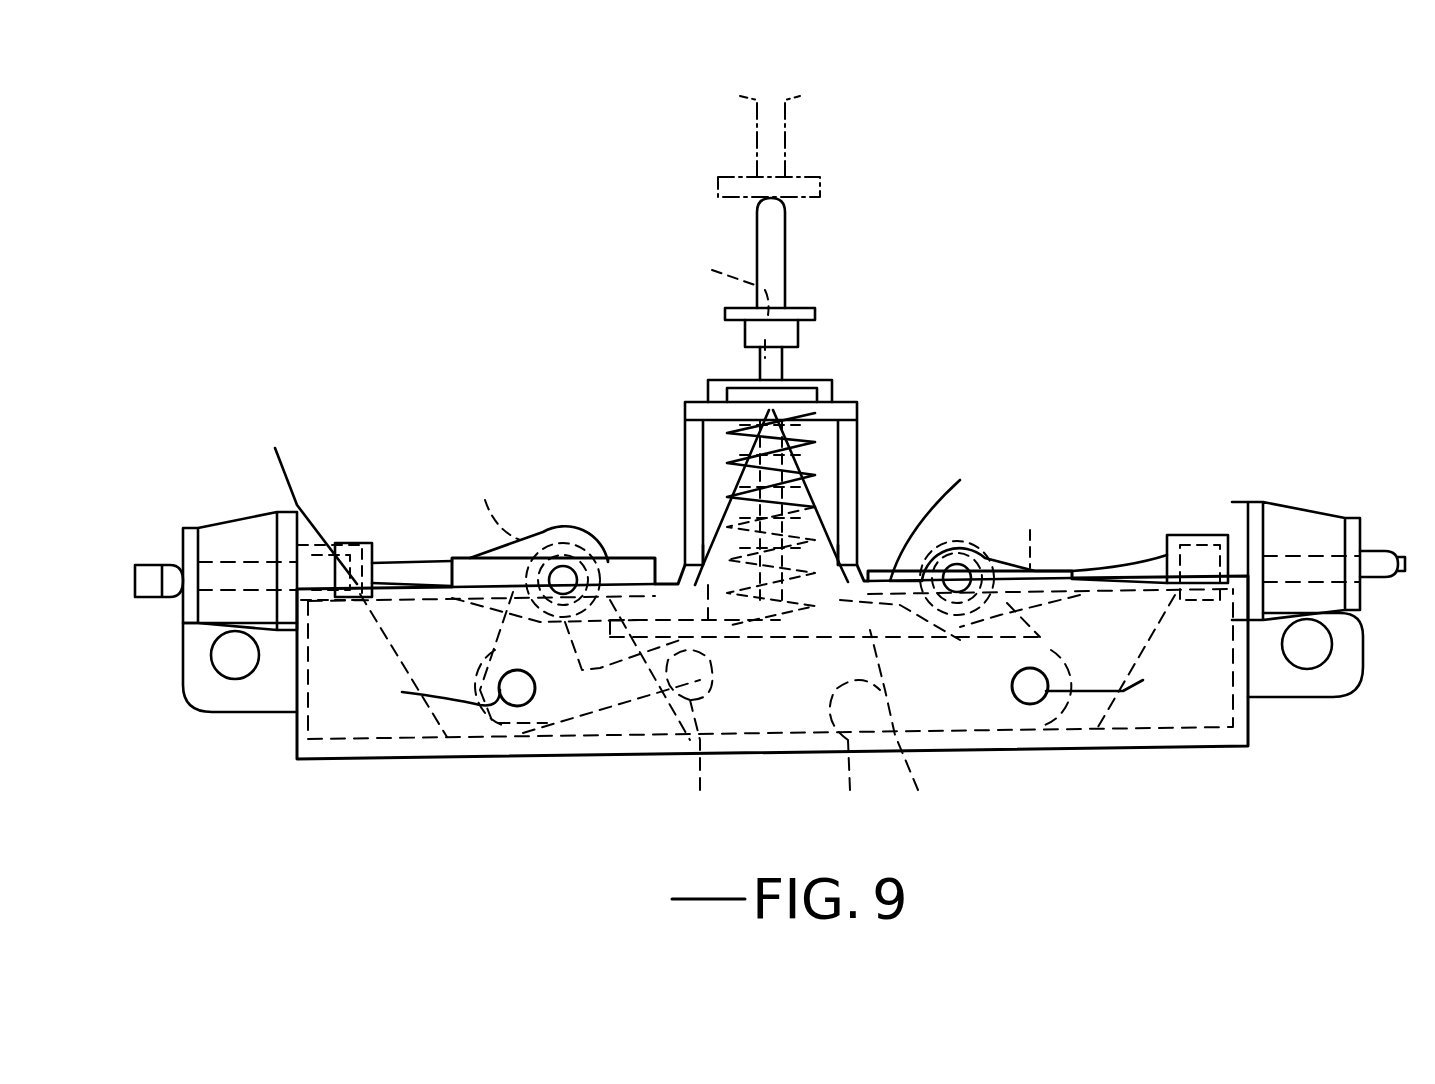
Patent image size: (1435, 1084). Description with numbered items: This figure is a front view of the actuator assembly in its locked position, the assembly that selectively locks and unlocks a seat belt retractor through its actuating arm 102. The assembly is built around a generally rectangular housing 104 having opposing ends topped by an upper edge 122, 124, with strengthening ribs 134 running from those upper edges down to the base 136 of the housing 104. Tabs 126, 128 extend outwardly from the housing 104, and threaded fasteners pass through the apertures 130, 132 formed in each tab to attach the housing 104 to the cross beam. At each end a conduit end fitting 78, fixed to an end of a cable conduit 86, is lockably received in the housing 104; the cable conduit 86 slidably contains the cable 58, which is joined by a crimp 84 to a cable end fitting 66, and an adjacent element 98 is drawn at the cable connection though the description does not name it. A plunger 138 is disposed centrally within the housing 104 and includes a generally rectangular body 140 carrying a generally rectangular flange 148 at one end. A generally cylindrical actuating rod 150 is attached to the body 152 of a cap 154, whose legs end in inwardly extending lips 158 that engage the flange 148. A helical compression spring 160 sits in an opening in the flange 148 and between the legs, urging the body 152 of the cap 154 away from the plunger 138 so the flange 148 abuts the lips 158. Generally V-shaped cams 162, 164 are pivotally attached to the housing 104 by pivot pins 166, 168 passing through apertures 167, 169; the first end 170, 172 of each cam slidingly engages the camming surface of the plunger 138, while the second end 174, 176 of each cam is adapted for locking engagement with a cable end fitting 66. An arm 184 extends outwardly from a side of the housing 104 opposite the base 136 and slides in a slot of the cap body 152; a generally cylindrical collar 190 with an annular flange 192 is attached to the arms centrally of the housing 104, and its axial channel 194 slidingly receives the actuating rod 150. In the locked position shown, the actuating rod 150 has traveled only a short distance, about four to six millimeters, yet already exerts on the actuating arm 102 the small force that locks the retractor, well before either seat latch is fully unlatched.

The cable 58 is at (400, 563).
The cable end fitting 66 is at (546, 530).
The conduit end fitting 78 is at (240, 512).
The crimp 84 is at (636, 558).
The cable conduit 86 is at (170, 570).
The coupling block 98 is at (355, 543).
The actuating arm 102 is at (820, 190).
The housing 104 is at (608, 760).
The upper edge 122 is at (303, 500).
The upper edge 124 is at (1234, 502).
The tab 126 is at (205, 692).
The tab 128 is at (1335, 690).
The aperture 130 is at (240, 662).
The aperture 132 is at (1303, 666).
The strengthening rib 134 is at (318, 545).
The base 136 is at (400, 762).
The plunger 138 is at (768, 640).
The body 140 is at (907, 724).
The flange 148 is at (825, 510).
The actuating rod 150 is at (775, 245).
The body 152 is at (860, 414).
The cap 154 is at (694, 398).
The lip 158 is at (705, 525).
The spring 160 is at (800, 440).
The cam 162 is at (482, 650).
The cam 164 is at (1052, 640).
The pivot pin 166 is at (517, 706).
The aperture 167 is at (486, 696).
The pivot pin 168 is at (1030, 704).
The aperture 169 is at (1120, 678).
The first end 170 is at (689, 732).
The first end 172 is at (853, 749).
The second end 174 is at (489, 507).
The second end 176 is at (1030, 534).
The arm 184 is at (785, 368).
The collar 190 is at (805, 335).
The flange 192 is at (812, 308).
The axial channel 194 is at (718, 306).